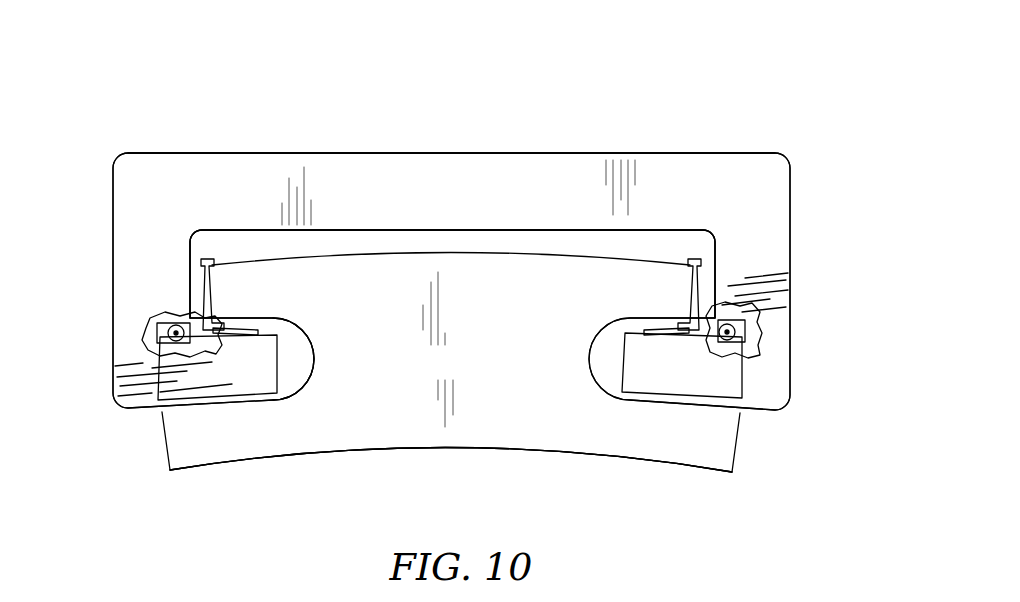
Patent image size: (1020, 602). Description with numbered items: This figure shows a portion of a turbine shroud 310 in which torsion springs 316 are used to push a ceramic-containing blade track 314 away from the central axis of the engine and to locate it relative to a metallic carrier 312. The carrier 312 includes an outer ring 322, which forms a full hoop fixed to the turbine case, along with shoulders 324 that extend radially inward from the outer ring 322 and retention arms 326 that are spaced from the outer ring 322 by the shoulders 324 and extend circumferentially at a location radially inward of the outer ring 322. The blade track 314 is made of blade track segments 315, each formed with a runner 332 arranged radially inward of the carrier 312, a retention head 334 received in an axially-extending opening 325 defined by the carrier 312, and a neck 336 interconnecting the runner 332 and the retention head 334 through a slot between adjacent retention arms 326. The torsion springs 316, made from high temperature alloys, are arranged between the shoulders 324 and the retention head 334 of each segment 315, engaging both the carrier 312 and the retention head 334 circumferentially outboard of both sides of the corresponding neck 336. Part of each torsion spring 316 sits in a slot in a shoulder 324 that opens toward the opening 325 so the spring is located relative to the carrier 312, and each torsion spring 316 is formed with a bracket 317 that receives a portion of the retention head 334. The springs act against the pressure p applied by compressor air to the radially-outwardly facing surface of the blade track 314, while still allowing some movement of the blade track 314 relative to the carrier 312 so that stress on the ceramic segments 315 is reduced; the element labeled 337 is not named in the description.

The turbine shroud 310 is at (738, 90).
The carrier 312 is at (566, 156).
The outer ring 322 is at (522, 182).
The shoulders 324 is at (140, 254).
The opening 325 is at (378, 240).
The pressure p is at (632, 245).
The bracket 317 is at (207, 255).
The adhesive foam 337 is at (158, 318).
The torsion springs 316 is at (152, 342).
The retention arms 326 is at (147, 411).
The neck 336 is at (255, 340).
The retention head 334 is at (308, 361).
The runner 332 is at (598, 455).
The blade track segments 315 is at (320, 454).
The blade track 314 is at (358, 447).